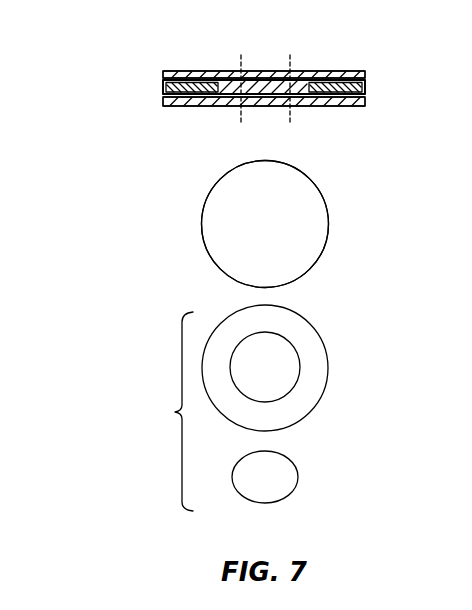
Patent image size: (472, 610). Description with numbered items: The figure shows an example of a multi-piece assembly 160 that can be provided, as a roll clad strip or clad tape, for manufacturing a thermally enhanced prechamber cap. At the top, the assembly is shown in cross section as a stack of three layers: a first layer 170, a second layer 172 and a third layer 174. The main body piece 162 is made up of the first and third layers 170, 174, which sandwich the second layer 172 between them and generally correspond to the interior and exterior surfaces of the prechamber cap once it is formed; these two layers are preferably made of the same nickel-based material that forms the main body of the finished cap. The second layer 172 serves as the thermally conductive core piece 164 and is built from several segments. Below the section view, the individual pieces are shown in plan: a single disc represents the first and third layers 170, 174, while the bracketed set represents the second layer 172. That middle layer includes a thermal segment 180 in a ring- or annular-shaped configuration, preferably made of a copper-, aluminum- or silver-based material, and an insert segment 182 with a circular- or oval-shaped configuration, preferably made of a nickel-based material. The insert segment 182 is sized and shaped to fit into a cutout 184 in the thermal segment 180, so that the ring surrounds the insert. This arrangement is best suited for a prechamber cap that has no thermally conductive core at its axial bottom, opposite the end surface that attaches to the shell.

The multi-piece assembly 160 is at (207, 60).
The main body piece 162 is at (211, 100).
The thermally conductive core piece 164 is at (160, 88).
The first layer 170 is at (362, 76).
The second layer 172 is at (253, 295).
The third layer 174 is at (362, 103).
The thermal segment 180 is at (172, 92).
The insert segment 182 is at (265, 87).
The cutout 184 is at (282, 397).